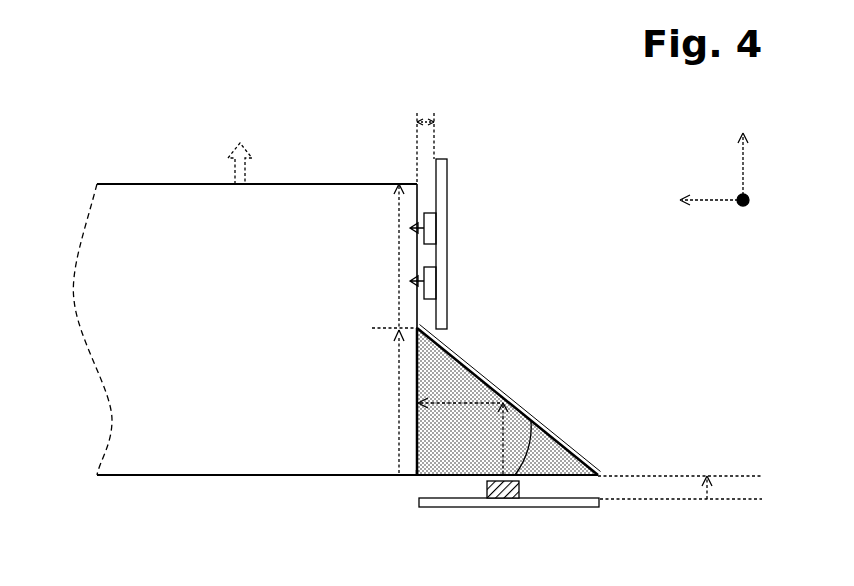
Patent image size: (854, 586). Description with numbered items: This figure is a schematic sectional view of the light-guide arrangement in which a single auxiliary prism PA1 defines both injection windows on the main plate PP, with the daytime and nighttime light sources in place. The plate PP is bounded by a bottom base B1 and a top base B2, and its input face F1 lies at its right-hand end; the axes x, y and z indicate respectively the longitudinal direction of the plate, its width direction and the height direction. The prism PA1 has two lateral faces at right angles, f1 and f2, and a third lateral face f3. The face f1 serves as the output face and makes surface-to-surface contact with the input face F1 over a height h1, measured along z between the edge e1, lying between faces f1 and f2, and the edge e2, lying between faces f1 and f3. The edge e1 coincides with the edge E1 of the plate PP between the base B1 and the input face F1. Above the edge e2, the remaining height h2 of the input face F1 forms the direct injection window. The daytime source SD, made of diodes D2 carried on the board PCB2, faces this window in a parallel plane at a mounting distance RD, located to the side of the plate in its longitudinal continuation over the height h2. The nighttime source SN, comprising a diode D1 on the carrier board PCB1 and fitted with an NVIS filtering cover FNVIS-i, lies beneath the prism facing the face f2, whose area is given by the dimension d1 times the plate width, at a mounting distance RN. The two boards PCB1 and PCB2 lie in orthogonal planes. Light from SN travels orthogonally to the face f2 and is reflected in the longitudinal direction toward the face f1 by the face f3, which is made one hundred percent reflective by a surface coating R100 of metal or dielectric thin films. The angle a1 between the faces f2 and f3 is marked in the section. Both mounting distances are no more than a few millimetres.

The plate PP is at (125, 478).
The top base B2 is at (175, 172).
The base B1 is at (240, 481).
The input face F1 is at (429, 182).
The mounting distance for the daytime source RD is at (425, 138).
The daytime light source SD is at (465, 230).
The diodes of the daytime source D2 is at (447, 208).
The carrier board for the daytime source PCB2 is at (447, 256).
The height of the second injection window h2 is at (381, 256).
The edge of the auxiliary prism between faces f1 and f3 e2 is at (383, 328).
The height of the first injection window h1 is at (379, 402).
The auxiliary prism PA1 is at (511, 400).
The third lateral face f3 is at (509, 400).
The surface coating R100 is at (478, 372).
The first lateral face f1 is at (428, 427).
The second lateral face f2 is at (463, 436).
The dimension of the auxiliary input face d1 is at (463, 436).
The angle alpha 1 a1 is at (533, 447).
The edge of the plate E1 is at (387, 507).
The edge of the auxiliary prism between faces f1 and f2 e1 is at (419, 478).
The nighttime light source SN is at (528, 528).
The carrier board for the nighttime source PCB1 is at (546, 507).
The diode of the nighttime source D1 is at (474, 528).
The NVIS filtering cover FNVIS-i is at (497, 499).
The mounting distance for the nighttime source RN is at (680, 488).
The axis x is at (703, 202).
The axis y is at (751, 202).
The axis z is at (748, 157).